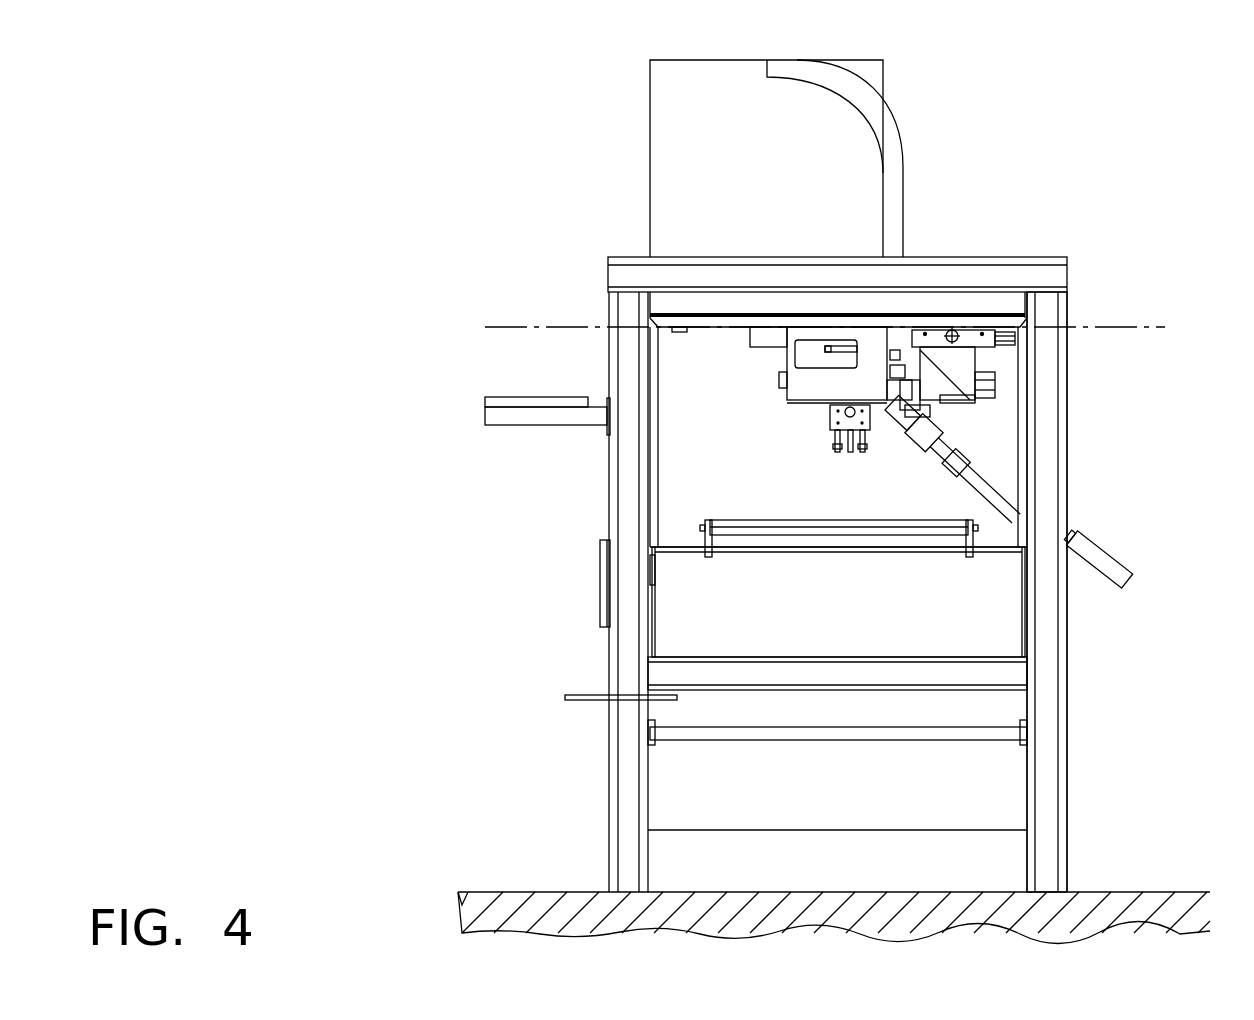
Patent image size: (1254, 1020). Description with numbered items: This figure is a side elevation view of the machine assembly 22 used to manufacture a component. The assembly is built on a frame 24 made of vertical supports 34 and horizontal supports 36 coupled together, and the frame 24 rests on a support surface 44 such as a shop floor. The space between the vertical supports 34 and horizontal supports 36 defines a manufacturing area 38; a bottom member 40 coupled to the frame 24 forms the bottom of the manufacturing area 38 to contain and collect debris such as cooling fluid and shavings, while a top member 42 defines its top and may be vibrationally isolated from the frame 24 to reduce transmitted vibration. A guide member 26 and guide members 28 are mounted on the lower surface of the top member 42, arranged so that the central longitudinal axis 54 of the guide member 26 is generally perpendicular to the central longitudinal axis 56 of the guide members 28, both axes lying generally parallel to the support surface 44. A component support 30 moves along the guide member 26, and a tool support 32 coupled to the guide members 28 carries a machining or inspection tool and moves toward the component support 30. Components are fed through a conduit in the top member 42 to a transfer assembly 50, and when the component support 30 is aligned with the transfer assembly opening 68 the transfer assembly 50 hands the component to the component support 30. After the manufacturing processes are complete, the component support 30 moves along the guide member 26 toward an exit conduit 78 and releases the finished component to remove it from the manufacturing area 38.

The machine assembly 22 is at (436, 160).
The frame 24 is at (1075, 402).
The guide member 26 is at (947, 308).
The guide members 28 is at (698, 337).
The component support 30 is at (946, 425).
The tool support 32 is at (917, 398).
The vertical supports 34 is at (609, 862).
The horizontal supports 36 is at (975, 257).
The manufacturing area 38 is at (688, 453).
The bottom member 40 is at (873, 712).
The top member 42 is at (762, 300).
The support surface 44 is at (518, 890).
The transfer assembly 50 is at (800, 413).
The central longitudinal axis 54 is at (957, 330).
The central longitudinal axis 56 is at (513, 325).
The transfer assembly opening 68 is at (946, 405).
The exit conduit 78 is at (1122, 545).